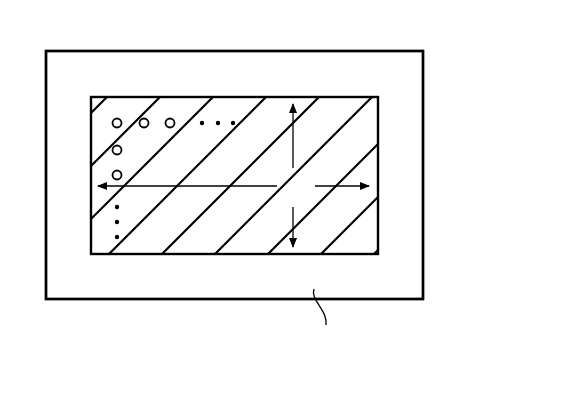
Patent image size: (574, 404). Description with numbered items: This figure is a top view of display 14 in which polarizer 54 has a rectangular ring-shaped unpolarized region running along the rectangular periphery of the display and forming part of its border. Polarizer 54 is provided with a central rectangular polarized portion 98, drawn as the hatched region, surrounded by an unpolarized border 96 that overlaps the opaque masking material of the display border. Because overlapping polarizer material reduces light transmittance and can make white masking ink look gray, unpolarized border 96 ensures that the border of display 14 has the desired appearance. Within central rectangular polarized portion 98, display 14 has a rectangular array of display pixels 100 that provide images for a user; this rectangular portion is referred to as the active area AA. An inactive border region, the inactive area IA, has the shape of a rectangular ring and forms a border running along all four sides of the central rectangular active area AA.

The display 14 is at (443, 68).
The polarizer 54 is at (423, 242).
The unpolarized border 96 is at (373, 62).
The central rectangular polarized portion 98 is at (338, 108).
The display pixels 100 is at (170, 118).